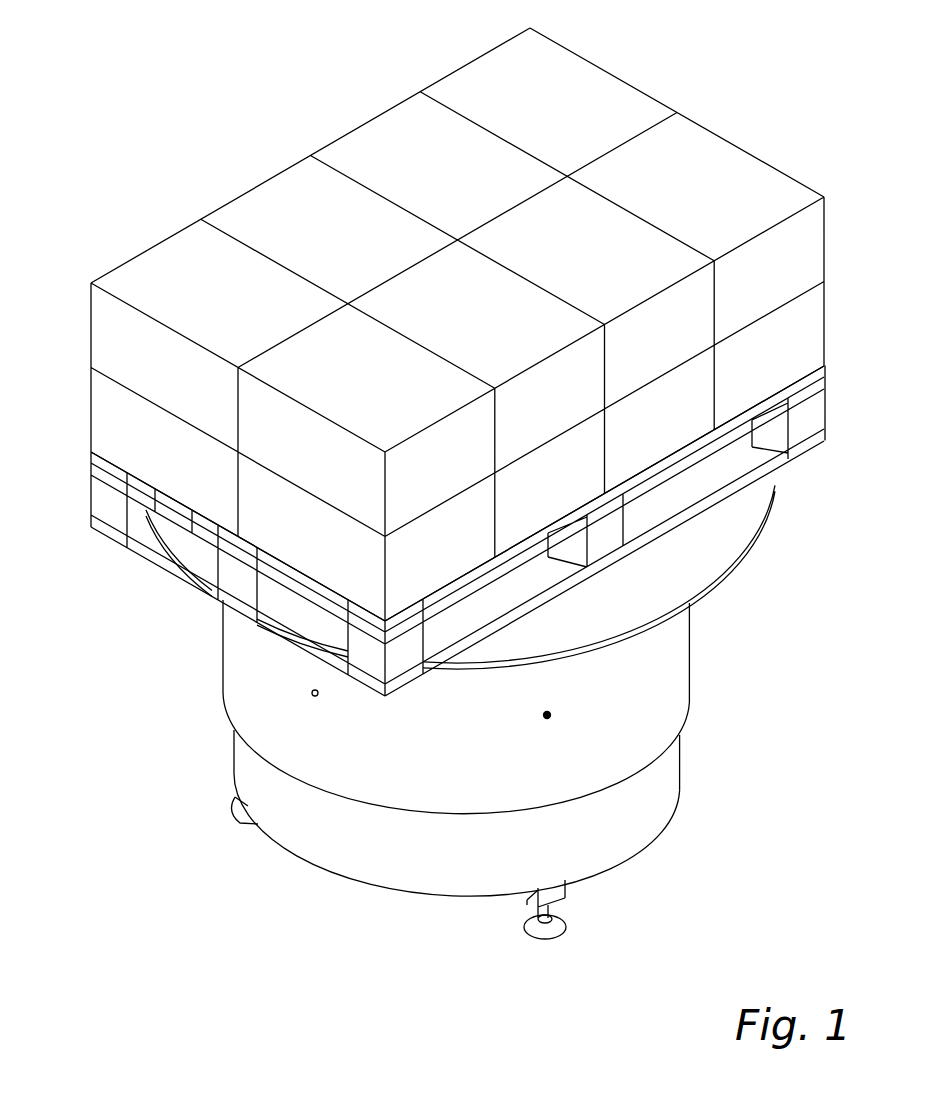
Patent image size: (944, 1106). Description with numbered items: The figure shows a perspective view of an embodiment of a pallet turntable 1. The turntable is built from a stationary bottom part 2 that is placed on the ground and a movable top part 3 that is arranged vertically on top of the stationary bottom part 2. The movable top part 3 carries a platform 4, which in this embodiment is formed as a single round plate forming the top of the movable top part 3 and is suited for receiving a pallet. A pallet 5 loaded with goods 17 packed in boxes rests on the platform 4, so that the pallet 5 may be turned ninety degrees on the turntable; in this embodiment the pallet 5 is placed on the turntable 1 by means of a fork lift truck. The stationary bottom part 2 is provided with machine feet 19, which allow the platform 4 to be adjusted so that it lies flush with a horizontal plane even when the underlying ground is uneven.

The pallet turntable 1 is at (118, 121).
The goods 17 is at (395, 162).
The pallet 5 is at (112, 510).
The platform 4 is at (697, 549).
The movable top part 3 is at (618, 684).
The stationary bottom part 2 is at (602, 825).
The machine feet 19 is at (550, 930).